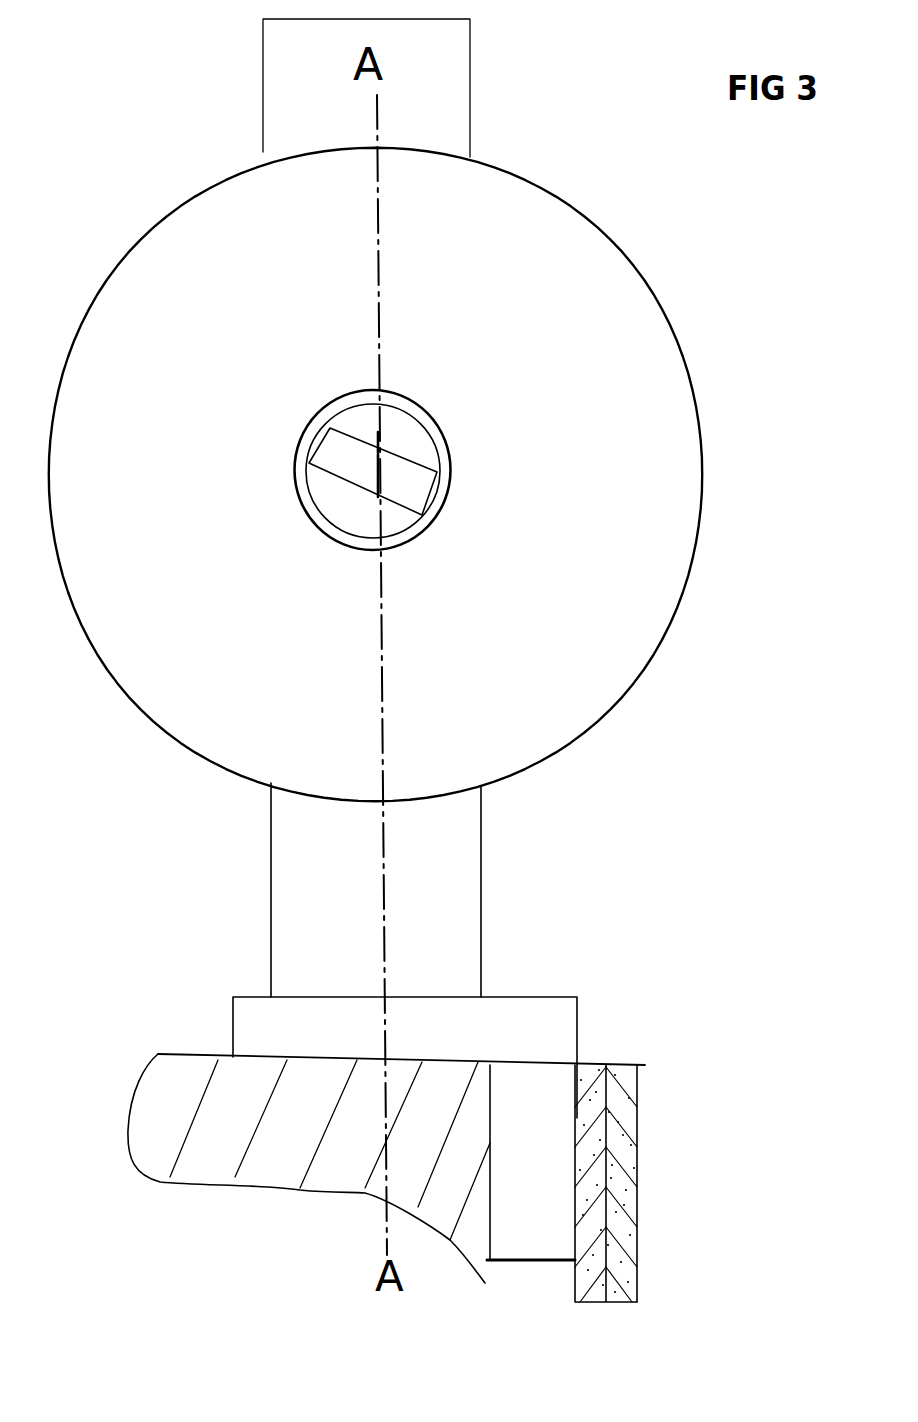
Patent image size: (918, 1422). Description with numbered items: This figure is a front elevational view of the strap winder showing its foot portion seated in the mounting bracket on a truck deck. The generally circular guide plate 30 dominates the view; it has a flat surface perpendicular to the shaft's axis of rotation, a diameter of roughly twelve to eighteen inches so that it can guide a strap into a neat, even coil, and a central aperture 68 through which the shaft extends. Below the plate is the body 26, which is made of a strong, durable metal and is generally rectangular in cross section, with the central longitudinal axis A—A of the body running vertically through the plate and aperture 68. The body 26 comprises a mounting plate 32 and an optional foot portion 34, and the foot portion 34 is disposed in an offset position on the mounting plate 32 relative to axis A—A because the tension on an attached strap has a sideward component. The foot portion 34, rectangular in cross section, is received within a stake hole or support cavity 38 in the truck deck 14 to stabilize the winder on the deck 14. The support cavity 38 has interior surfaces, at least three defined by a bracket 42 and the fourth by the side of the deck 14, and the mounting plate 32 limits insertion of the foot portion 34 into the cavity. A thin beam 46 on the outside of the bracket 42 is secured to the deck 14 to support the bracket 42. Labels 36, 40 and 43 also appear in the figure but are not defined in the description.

The truck deck 14 is at (150, 1090).
The body 26 is at (570, 70).
The guide plate 30 is at (663, 445).
The mounting plate 32 is at (562, 995).
The foot portion 34 is at (557, 1187).
The recess 36 is at (504, 1283).
The support cavity 38 is at (575, 1285).
The strip edge 40 is at (691, 1183).
The bracket 42 is at (588, 1258).
The recess wall 43 is at (548, 1108).
The thin beam 46 is at (637, 1237).
The central aperture 68 is at (443, 483).